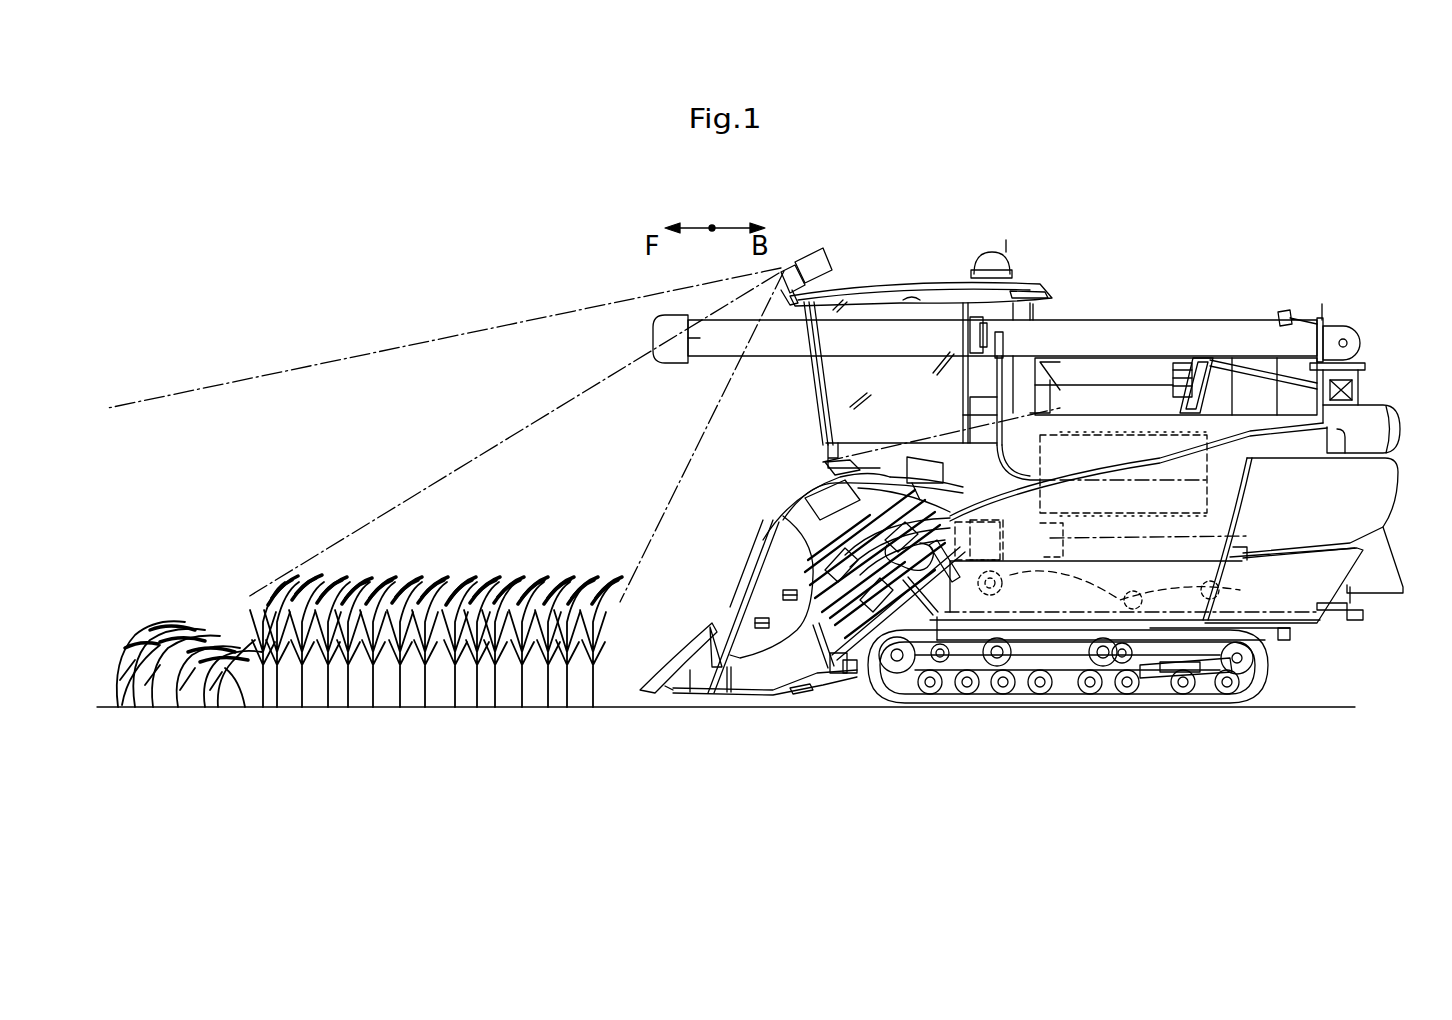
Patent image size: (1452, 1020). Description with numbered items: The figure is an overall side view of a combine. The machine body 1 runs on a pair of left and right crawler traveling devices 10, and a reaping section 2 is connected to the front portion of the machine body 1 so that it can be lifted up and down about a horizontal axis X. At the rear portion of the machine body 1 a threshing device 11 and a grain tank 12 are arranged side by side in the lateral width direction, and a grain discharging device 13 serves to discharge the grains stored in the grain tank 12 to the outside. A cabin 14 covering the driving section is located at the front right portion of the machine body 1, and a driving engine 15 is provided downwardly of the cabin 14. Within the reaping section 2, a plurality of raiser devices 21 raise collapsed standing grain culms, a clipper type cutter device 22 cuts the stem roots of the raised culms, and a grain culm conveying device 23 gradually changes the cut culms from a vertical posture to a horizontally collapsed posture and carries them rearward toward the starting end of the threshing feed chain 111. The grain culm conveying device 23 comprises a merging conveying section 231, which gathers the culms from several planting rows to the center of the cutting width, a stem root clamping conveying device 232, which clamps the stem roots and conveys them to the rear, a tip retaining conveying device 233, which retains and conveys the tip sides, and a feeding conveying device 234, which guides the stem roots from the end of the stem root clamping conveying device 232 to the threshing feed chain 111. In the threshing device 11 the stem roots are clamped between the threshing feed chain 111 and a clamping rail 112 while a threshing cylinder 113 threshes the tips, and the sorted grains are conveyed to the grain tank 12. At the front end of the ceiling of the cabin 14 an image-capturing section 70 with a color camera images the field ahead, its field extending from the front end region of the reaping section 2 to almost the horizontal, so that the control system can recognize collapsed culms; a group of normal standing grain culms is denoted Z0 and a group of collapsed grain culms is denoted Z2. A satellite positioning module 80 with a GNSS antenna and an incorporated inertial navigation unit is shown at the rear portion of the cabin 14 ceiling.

The machine body 1 is at (1260, 640).
The reaping section 2 is at (802, 560).
The crawler traveling device 10 is at (1240, 690).
The threshing device 11 is at (1240, 425).
The grain tank 12 is at (1128, 372).
The grain discharging device 13 is at (720, 348).
The cabin 14 is at (806, 384).
The driving engine 15 is at (1012, 630).
The raiser device 21 is at (737, 603).
The cutter device 22 is at (790, 695).
The grain culm conveying device 23 is at (850, 557).
The image-capturing section 70 is at (806, 258).
The satellite positioning module 80 is at (990, 264).
The threshing feed chain 111 is at (1260, 467).
The clamping rail 112 is at (1030, 415).
The threshing cylinder 113 is at (1248, 540).
The merging conveying section 231 is at (826, 665).
The stem root clamping conveying device 232 is at (895, 590).
The tip retaining conveying device 233 is at (820, 510).
The feeding conveying device 234 is at (940, 470).
The horizontal axis X is at (975, 540).
The group of normal standing grain culms Z0 is at (563, 572).
The group of collapsed grain culms Z2 is at (196, 605).